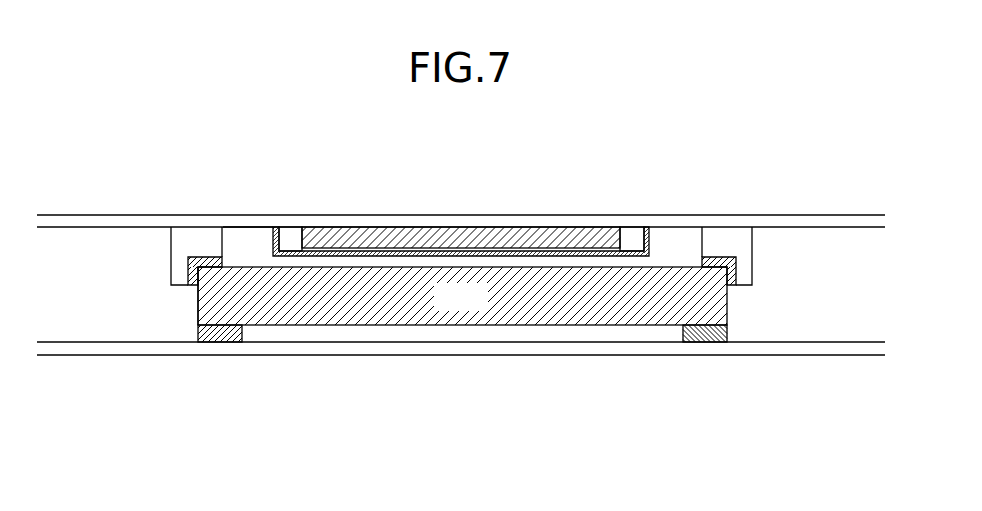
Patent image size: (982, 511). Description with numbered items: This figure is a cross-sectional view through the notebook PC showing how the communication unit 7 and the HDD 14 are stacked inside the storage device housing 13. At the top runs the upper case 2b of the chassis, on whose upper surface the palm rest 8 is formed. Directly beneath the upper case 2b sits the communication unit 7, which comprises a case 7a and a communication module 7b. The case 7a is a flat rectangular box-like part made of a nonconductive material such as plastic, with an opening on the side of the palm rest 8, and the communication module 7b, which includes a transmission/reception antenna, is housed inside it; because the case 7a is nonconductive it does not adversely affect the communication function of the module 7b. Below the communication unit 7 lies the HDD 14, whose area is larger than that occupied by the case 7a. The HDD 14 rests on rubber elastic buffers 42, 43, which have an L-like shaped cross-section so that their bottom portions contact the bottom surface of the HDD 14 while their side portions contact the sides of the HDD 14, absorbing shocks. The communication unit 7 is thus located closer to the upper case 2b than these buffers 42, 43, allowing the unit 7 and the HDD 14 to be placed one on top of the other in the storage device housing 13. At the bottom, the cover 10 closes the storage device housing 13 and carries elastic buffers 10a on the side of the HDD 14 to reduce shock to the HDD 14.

The upper case 2b is at (67, 220).
The communication unit 7 is at (392, 190).
The case 7a is at (270, 233).
The communication module 7b is at (510, 240).
The palm rest 8 is at (240, 214).
The cover 10 is at (345, 347).
The elastic buffers 10a is at (220, 333).
The storage device housing 13 is at (192, 312).
The HDD 14 is at (536, 302).
The elastic buffer 42 is at (190, 286).
The elastic buffer 43 is at (736, 287).